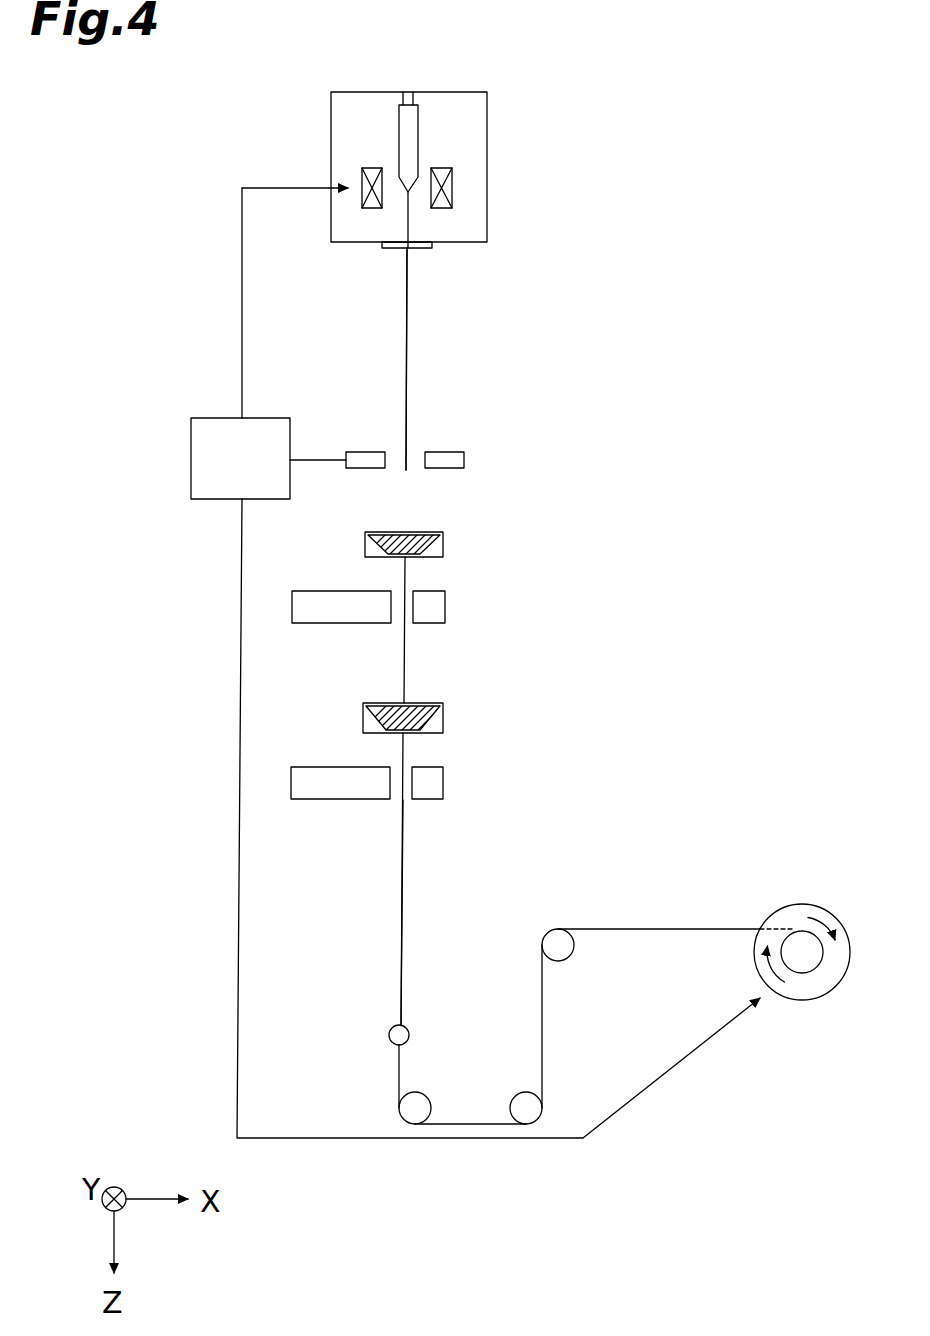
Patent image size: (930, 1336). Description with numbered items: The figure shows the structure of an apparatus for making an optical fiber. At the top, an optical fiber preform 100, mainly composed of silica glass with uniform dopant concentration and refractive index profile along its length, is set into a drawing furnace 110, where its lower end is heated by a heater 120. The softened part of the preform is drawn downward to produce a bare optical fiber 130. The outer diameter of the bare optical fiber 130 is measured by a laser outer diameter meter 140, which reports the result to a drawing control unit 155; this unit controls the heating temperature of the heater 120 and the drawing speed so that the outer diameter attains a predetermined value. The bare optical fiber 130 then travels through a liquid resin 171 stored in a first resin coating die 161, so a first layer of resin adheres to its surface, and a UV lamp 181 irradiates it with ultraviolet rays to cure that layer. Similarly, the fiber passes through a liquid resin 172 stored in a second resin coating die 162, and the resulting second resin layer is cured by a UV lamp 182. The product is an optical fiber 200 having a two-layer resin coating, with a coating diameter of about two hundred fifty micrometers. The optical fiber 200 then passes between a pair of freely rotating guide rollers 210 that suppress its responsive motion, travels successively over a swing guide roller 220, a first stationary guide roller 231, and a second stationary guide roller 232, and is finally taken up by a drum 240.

The optical fiber preform 100 is at (409, 146).
The drawing furnace 110 is at (487, 197).
The heater 120 is at (372, 208).
The bare optical fiber 130 is at (407, 337).
The laser outer diameter meter 140 is at (464, 460).
The drawing control unit 155 is at (191, 470).
The first resin coating die 161 is at (443, 553).
The liquid resin 171 is at (414, 536).
The UV lamp 181 is at (445, 601).
The second resin coating die 162 is at (443, 727).
The liquid resin 172 is at (410, 712).
The UV lamp 182 is at (443, 778).
The optical fiber 200 is at (403, 866).
The guide rollers 210 is at (389, 1035).
The swing guide roller 220 is at (421, 1092).
The first stationary guide roller 231 is at (521, 1092).
The second stationary guide roller 232 is at (568, 957).
The drum 240 is at (815, 985).